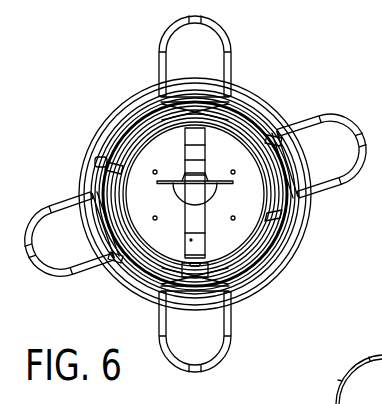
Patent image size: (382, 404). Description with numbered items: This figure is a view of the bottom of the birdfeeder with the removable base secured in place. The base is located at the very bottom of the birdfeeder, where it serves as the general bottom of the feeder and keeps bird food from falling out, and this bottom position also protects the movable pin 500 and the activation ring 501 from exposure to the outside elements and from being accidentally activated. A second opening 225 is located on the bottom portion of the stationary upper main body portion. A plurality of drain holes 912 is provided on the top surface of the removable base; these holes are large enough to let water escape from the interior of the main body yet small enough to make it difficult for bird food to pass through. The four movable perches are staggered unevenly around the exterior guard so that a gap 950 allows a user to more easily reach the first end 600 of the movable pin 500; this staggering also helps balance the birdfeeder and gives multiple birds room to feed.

The second opening 225 is at (105, 148).
The movable pin 500 is at (192, 222).
The activation ring 501 is at (168, 176).
The first end 600 is at (95, 163).
The drain holes 912 is at (234, 170).
The gap 950 is at (254, 264).